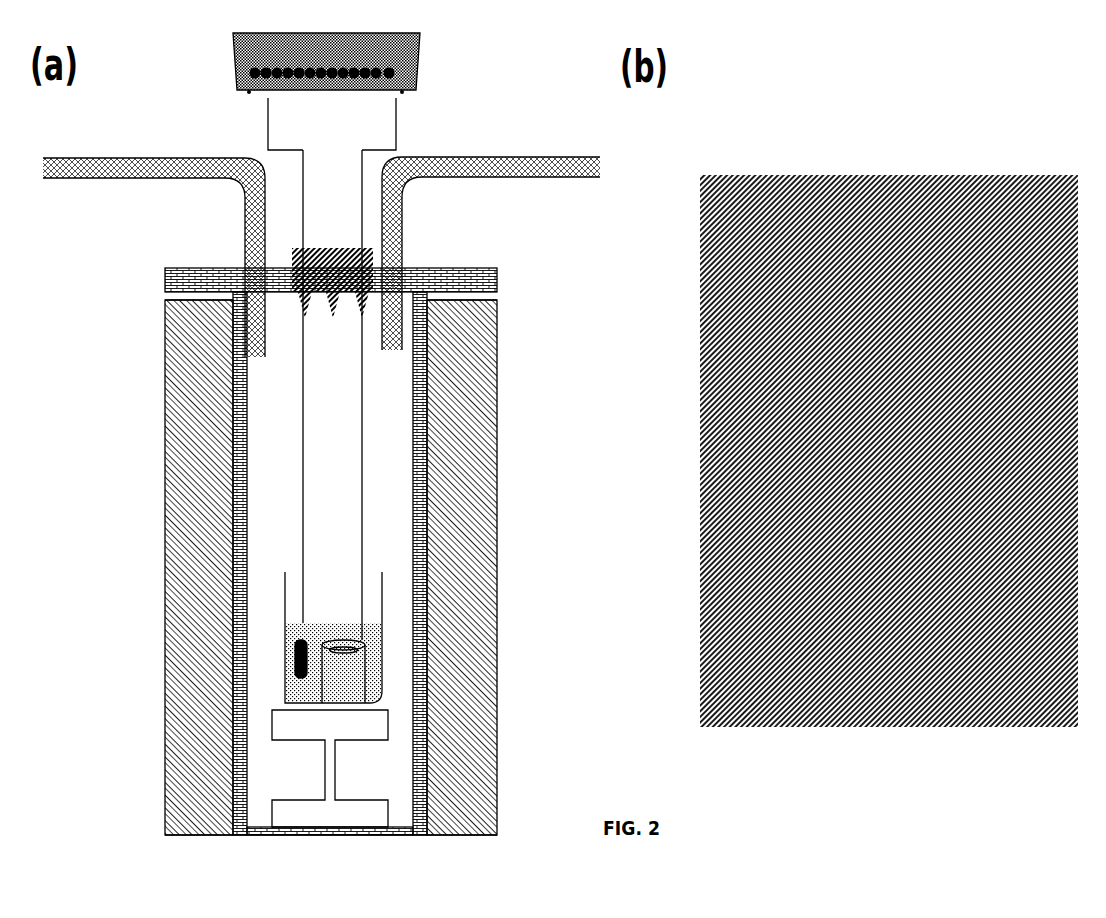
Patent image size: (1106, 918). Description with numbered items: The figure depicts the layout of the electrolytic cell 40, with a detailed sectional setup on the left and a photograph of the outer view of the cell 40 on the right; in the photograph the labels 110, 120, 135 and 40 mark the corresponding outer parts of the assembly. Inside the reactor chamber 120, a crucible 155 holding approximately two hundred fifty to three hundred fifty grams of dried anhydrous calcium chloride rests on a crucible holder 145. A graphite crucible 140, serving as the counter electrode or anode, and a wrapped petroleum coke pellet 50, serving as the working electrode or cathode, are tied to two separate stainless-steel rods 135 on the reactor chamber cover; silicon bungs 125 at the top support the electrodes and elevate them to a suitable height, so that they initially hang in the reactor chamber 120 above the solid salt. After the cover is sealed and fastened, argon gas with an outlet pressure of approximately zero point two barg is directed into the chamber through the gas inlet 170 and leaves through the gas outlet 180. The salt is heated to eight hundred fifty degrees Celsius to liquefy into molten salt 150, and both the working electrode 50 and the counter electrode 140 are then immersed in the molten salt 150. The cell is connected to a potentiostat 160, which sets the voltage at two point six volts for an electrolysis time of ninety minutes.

The electrolytic cell 40 is at (396, 468).
The wrapped petroleum coke pellet 50 is at (297, 648).
The furnace outer wall 110 is at (163, 348).
The reactor chamber 120 is at (233, 815).
The silicon bungs 125 is at (302, 267).
The stainless-steel rods 135 is at (305, 423).
The graphite crucible 140 is at (317, 693).
The crucible holder 145 is at (377, 722).
The molten salt 150 is at (297, 688).
The crucible 155 is at (382, 605).
The potentiostat 160 is at (299, 91).
The gas inlet 170 is at (548, 145).
The gas outlet 180 is at (235, 147).